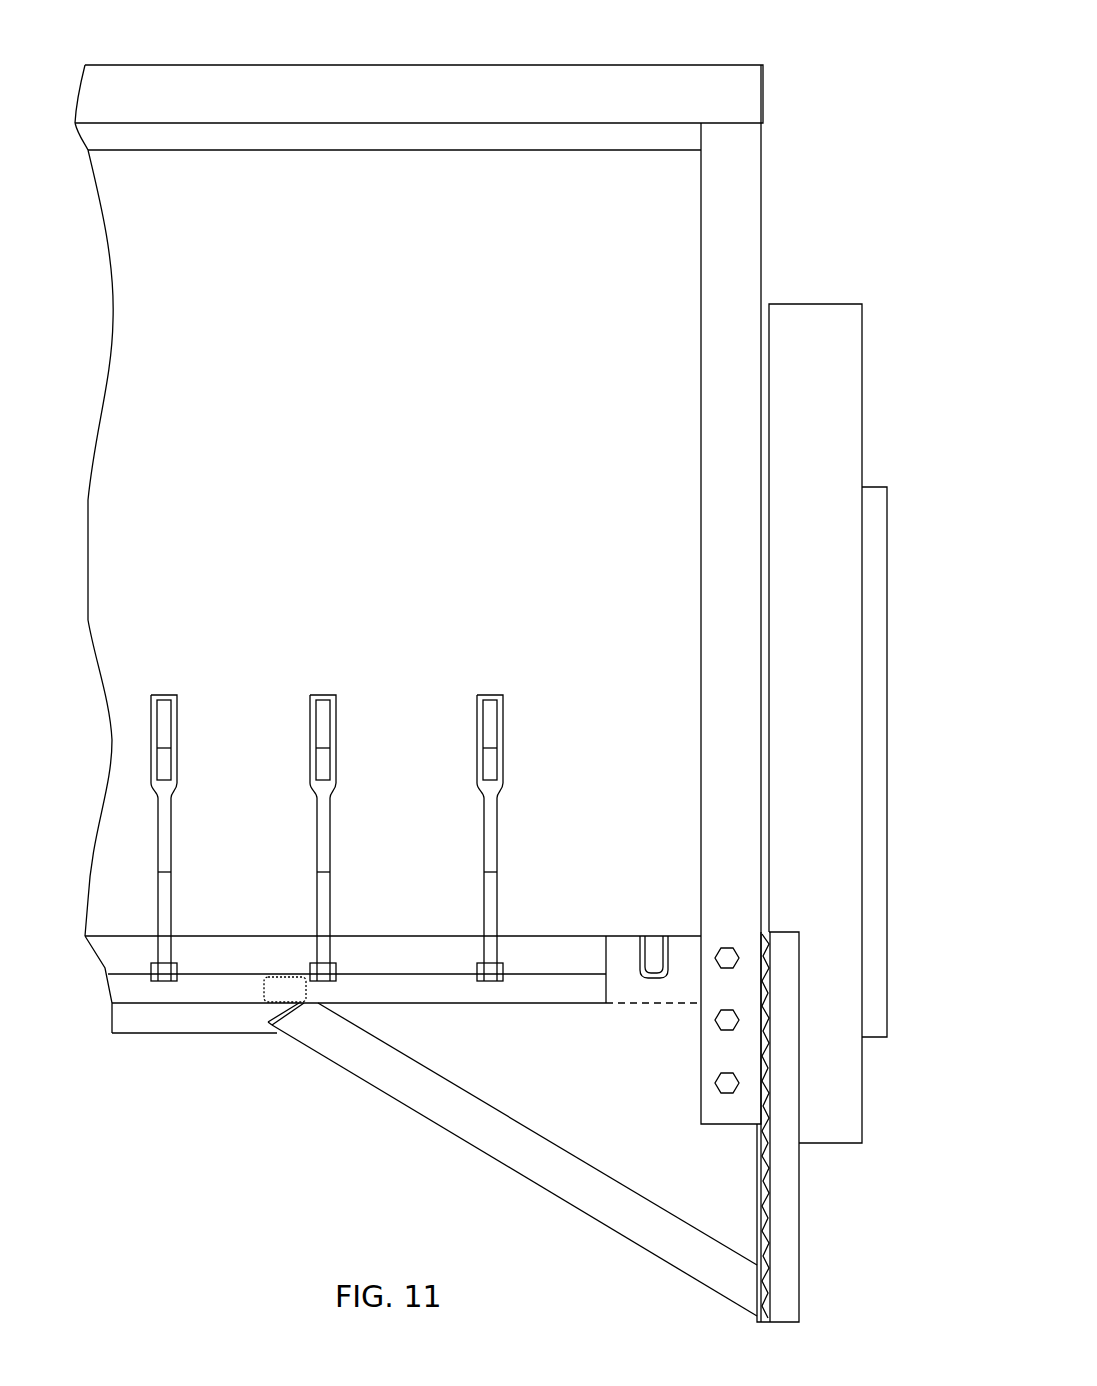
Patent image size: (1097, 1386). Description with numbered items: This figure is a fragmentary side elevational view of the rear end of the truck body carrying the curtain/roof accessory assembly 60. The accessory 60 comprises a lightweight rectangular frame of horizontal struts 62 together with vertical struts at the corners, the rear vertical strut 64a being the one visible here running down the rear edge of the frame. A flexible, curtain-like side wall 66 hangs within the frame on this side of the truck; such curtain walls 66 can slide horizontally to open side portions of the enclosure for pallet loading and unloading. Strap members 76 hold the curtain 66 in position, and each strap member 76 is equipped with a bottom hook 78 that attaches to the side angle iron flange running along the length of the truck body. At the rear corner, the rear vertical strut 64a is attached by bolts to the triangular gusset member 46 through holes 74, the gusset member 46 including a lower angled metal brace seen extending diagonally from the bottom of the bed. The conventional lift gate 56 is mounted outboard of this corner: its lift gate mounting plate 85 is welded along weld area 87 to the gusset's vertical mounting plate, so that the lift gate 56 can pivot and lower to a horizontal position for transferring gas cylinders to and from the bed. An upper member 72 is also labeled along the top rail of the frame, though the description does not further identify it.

The curtain/roof accessory assembly 60 is at (556, 52).
The horizontal struts 62 is at (155, 105).
The top edge member 72 is at (262, 65).
The curtain-like side walls 66 is at (395, 480).
The rear vertical struts 64a is at (722, 503).
The lift gate 56 is at (832, 460).
The lift gate mounting plate 85 is at (780, 1231).
The weld area 87 is at (771, 1022).
The holes 74 is at (735, 1088).
The triangular gusset member 46 is at (555, 1108).
The strap members 76 is at (328, 836).
The bottom hooks 78 is at (492, 984).